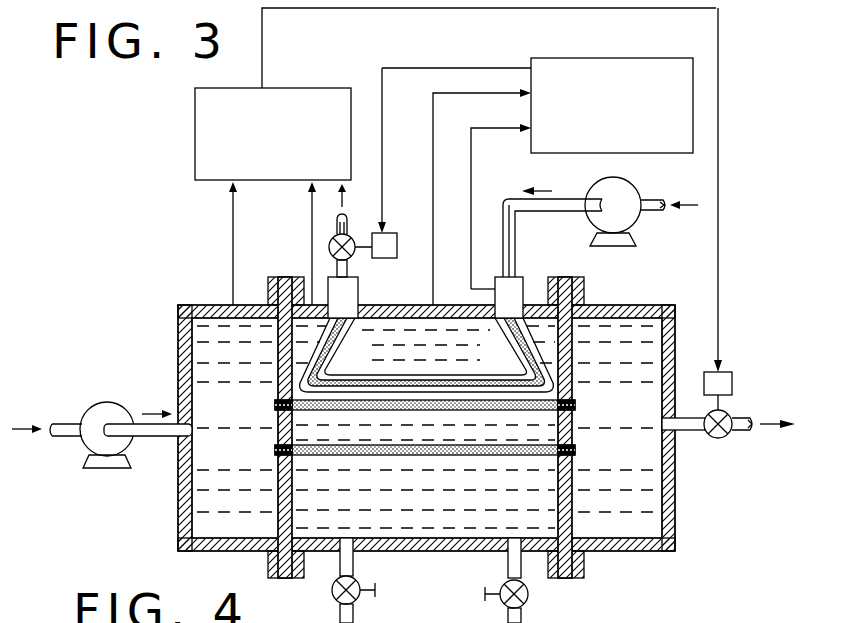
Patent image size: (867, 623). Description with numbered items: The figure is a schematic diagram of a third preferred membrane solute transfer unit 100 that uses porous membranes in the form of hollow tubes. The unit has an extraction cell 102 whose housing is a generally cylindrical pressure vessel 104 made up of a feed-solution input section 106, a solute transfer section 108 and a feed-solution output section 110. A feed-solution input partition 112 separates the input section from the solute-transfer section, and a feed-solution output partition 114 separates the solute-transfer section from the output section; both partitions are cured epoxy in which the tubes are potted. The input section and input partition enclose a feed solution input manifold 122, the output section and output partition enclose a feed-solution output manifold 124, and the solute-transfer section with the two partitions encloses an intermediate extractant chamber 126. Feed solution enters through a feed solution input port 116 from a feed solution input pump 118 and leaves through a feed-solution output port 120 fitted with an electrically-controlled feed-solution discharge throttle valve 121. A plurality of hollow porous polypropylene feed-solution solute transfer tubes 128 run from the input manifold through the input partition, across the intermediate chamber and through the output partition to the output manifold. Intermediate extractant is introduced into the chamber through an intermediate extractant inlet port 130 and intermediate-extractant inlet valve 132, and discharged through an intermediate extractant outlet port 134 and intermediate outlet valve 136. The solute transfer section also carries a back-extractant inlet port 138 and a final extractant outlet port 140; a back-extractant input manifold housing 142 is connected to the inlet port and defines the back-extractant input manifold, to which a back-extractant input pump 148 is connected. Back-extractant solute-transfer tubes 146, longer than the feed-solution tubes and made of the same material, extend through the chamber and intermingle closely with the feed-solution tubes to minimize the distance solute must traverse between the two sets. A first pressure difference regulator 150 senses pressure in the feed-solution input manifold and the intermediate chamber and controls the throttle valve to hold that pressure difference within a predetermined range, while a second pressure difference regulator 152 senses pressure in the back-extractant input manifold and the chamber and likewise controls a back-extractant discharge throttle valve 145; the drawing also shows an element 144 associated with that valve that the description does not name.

The solute transfer unit 100 is at (660, 303).
The extraction cell 102 is at (676, 553).
The pressure vessel 104 is at (622, 305).
The feed-solution input section 106 is at (200, 305).
The solute transfer section 108 is at (422, 552).
The feed-solution output section 110 is at (675, 500).
The feed-solution input partition 112 is at (278, 487).
The feed-solution output partition 114 is at (573, 500).
The feed solution input port 116 is at (194, 432).
The feed solution input pump 118 is at (110, 402).
The feed-solution output port 120 is at (664, 424).
The feed-solution discharge throttle valve 121 is at (718, 440).
The feed solution input manifold 122 is at (244, 398).
The feed-solution output manifold 124 is at (636, 396).
The intermediate extractant chamber 126 is at (444, 501).
The feed-solution solute transfer tubes 128 is at (440, 455).
The intermediate extractant inlet port 130 is at (345, 538).
The intermediate-extractant inlet valve 132 is at (332, 596).
The intermediate extractant outlet port 134 is at (513, 538).
The intermediate outlet valve 136 is at (530, 600).
The back-extractant inlet port 138 is at (495, 301).
The final extractant outlet port 140 is at (358, 300).
The back-extractant input manifold housing 142 is at (526, 278).
The valve actuator 144 is at (358, 280).
The back-extractant discharge throttle valve 145 is at (330, 243).
The back-extractant solute-transfer tubes 146 is at (446, 366).
The back-extractant input pump 148 is at (632, 185).
The first pressure difference regulator 150 is at (330, 88).
The second pressure difference regulator 152 is at (658, 58).